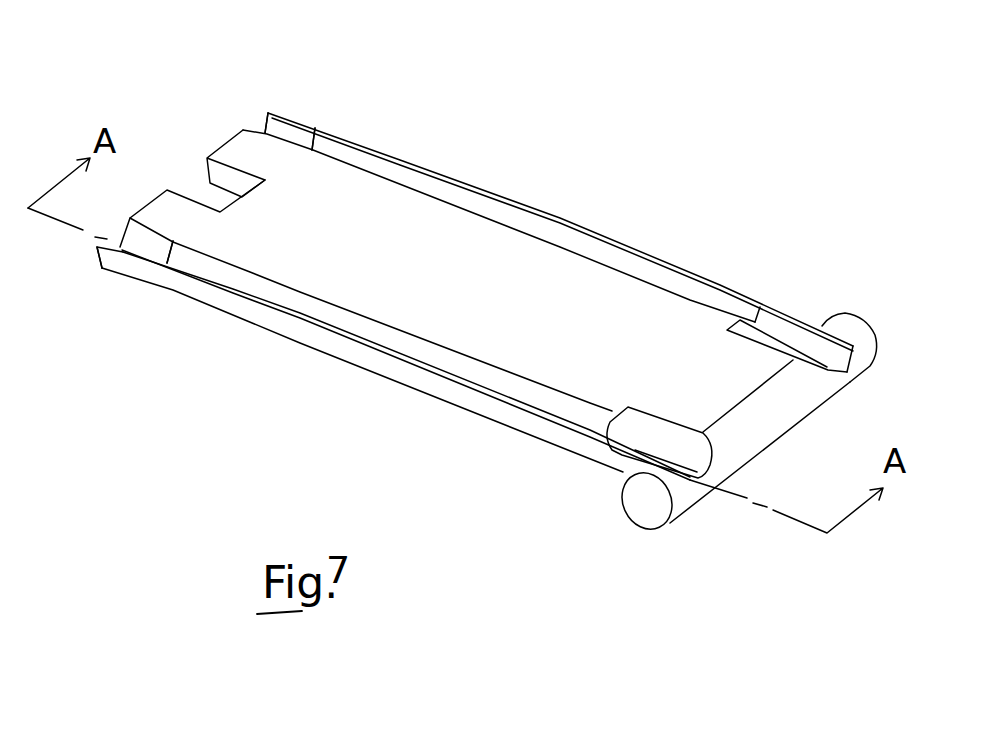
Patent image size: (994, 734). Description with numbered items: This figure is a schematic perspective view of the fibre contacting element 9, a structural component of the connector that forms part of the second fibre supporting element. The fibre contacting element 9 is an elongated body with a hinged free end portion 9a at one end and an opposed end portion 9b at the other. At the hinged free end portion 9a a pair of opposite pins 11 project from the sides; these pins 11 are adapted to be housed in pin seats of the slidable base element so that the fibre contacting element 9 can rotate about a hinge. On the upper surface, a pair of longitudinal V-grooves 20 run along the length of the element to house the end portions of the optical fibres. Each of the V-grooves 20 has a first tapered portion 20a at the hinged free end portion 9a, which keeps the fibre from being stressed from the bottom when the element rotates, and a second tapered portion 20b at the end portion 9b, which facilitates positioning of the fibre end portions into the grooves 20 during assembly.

The fibre contacting element 9 is at (543, 307).
The free end portion 9a is at (601, 490).
The end portion 9b is at (127, 295).
The longitudinal V-grooves 20 is at (507, 220).
The first tapered portion 20a is at (798, 342).
The second tapered portion 20b is at (285, 132).
The opposite pins 11 is at (650, 507).